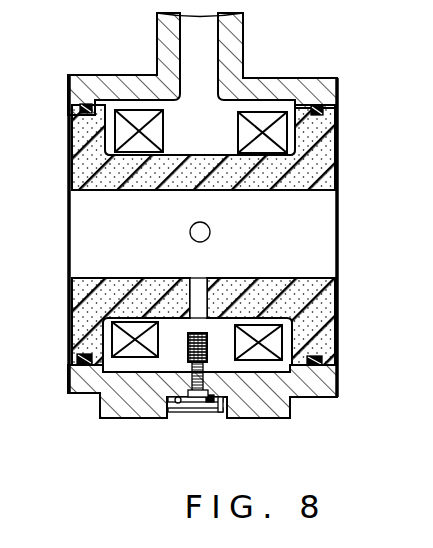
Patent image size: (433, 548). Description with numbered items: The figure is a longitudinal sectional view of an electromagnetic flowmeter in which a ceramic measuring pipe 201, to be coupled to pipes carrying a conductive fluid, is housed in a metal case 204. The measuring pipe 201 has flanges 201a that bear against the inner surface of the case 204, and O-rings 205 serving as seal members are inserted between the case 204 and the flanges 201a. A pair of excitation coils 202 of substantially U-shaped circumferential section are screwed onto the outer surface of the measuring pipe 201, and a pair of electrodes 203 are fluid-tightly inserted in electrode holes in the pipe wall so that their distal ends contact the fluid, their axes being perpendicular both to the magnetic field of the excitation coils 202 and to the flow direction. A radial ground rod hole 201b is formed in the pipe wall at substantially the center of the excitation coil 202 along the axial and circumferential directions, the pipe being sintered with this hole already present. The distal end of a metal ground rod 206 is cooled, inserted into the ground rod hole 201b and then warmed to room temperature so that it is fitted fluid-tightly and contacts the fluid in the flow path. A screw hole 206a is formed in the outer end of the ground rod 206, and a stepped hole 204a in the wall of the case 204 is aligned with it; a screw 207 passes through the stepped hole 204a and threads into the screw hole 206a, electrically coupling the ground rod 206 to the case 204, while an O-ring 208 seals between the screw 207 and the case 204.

The measuring pipe 201 is at (345, 188).
The flanges 201a is at (70, 117).
The ground rod hole 201b is at (204, 280).
The excitation coils 202 is at (272, 118).
The electrodes 203 is at (210, 227).
The metal case 204 is at (305, 403).
The stepped hole 204a is at (229, 411).
The O-rings 205 is at (87, 113).
The ground rod 206 is at (190, 282).
The screw hole 206a is at (208, 345).
The screw 207 is at (198, 413).
The O-ring 208 is at (177, 404).